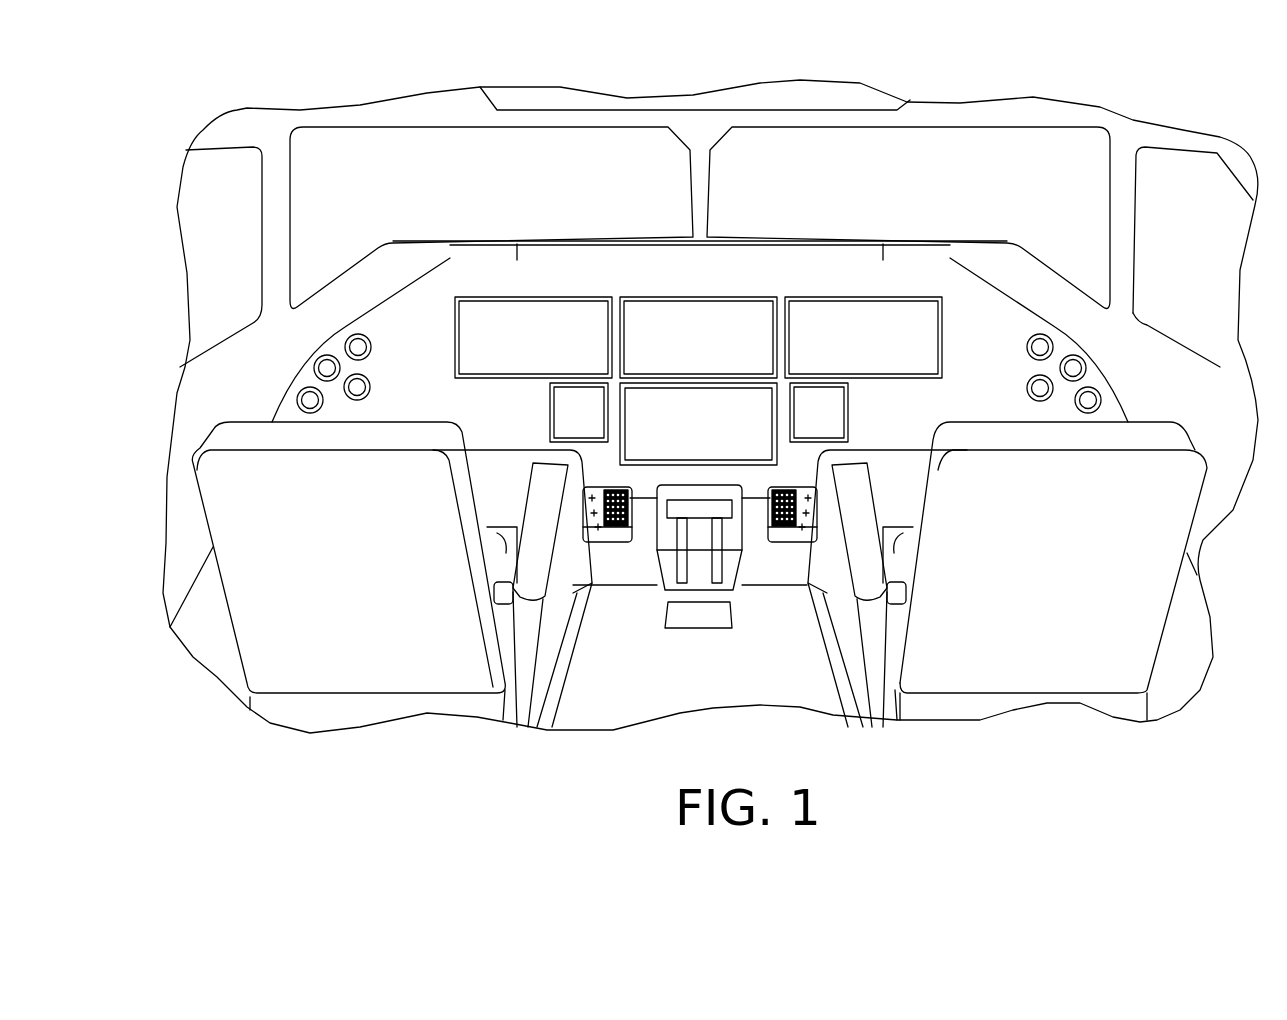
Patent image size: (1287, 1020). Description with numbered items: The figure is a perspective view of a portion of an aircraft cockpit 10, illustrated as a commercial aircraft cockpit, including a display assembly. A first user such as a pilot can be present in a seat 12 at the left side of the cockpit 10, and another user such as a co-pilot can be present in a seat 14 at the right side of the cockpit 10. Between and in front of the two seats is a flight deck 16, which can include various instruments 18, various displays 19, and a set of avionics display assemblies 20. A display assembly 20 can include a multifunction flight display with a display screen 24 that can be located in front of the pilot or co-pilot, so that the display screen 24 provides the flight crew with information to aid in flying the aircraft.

The aircraft cockpit 10 is at (423, 93).
The seat 12 is at (297, 647).
The seat 14 is at (1057, 657).
The flight deck 16 is at (335, 325).
The instruments 18 is at (308, 400).
The displays 19 is at (660, 317).
The avionics display assembly 20 is at (528, 434).
The display screen 24 is at (558, 412).